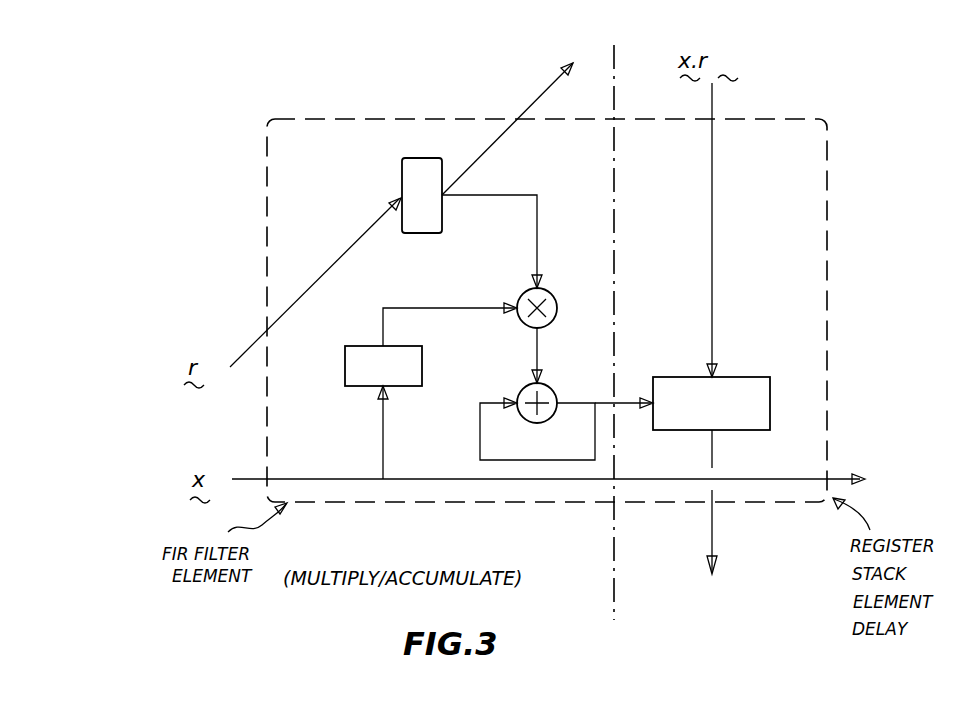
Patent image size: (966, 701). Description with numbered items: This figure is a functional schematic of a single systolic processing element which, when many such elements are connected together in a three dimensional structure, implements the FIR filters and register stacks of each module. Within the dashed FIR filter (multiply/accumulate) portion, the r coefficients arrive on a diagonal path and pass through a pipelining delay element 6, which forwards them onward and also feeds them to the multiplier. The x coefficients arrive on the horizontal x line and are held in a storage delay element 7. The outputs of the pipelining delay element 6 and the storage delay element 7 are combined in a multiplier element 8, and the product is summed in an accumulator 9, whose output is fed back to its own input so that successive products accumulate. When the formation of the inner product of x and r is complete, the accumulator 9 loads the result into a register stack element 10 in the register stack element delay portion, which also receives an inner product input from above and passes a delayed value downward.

The pipelining delay element 6 is at (422, 182).
The storage delay element 7 is at (366, 366).
The multiplier element 8 is at (547, 308).
The accumulator 9 is at (543, 396).
The register stack element 10 is at (727, 403).